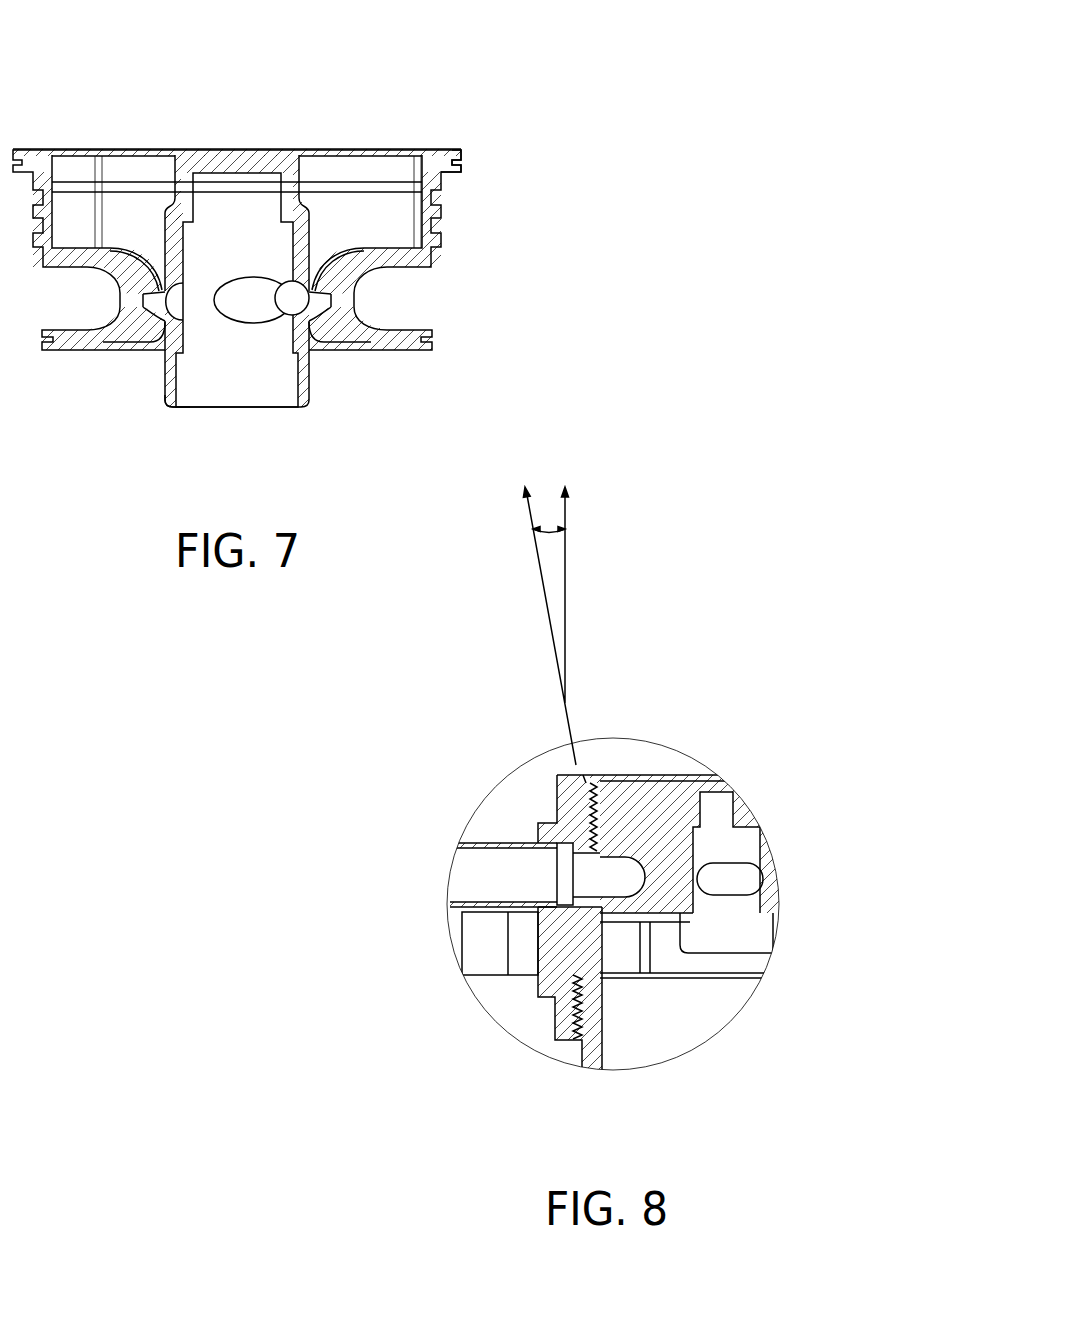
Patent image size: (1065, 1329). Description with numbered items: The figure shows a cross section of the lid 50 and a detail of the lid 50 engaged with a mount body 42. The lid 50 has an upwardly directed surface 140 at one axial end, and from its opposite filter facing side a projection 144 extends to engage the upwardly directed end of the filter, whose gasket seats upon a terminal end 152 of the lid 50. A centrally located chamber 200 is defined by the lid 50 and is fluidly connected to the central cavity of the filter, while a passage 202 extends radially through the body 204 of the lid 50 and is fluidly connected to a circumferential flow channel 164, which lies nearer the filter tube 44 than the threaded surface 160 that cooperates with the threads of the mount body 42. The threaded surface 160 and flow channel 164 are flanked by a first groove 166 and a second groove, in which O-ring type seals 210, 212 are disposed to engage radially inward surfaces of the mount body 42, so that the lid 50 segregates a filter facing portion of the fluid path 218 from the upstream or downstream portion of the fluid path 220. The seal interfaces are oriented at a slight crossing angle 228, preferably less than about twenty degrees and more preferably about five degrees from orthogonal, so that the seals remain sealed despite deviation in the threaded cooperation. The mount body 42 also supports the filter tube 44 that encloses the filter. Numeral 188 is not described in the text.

In FIG. 7, the upwardly directed surface 140 is at (48, 150).
In FIG. 7, the passage 202 is at (292, 305).
In FIG. 8, the passage 202 is at (738, 878).
In FIG. 7, the lid 50 is at (428, 158).
In FIG. 8, the lid 50 is at (672, 790).
In FIG. 7, the first groove 166 is at (465, 156).
In FIG. 8, the first groove 166 is at (557, 785).
In FIG. 7, the threaded surface 160 is at (448, 222).
In FIG. 7, the flow channel 164 is at (452, 288).
In FIG. 8, the flow channel 164 is at (613, 870).
In FIG. 7, the lower flange 188 is at (447, 339).
In FIG. 8, the lower flange 188 is at (576, 919).
In FIG. 7, the body 204 is at (305, 335).
In FIG. 7, the projection 144 is at (162, 362).
In FIG. 7, the terminal end 152 is at (168, 418).
In FIG. 7, the centrally located chamber 200 is at (207, 327).
In FIG. 8, the angle 228 is at (548, 526).
In FIG. 8, the seal 210 is at (584, 784).
In FIG. 8, the fluid path 220 is at (627, 877).
In FIG. 8, the mount body 42 is at (557, 775).
In FIG. 8, the seal 212 is at (582, 922).
In FIG. 8, the filter tube 44 is at (595, 1050).
In FIG. 8, the fluid path 218 is at (740, 968).